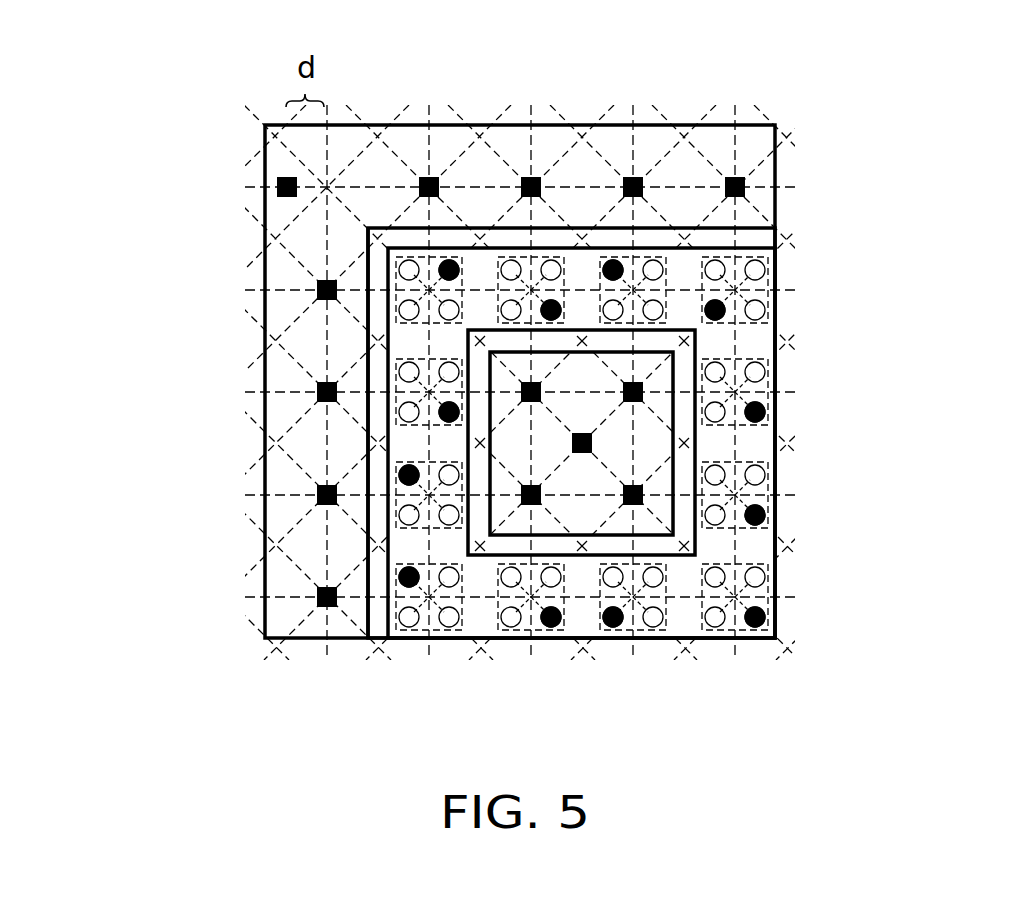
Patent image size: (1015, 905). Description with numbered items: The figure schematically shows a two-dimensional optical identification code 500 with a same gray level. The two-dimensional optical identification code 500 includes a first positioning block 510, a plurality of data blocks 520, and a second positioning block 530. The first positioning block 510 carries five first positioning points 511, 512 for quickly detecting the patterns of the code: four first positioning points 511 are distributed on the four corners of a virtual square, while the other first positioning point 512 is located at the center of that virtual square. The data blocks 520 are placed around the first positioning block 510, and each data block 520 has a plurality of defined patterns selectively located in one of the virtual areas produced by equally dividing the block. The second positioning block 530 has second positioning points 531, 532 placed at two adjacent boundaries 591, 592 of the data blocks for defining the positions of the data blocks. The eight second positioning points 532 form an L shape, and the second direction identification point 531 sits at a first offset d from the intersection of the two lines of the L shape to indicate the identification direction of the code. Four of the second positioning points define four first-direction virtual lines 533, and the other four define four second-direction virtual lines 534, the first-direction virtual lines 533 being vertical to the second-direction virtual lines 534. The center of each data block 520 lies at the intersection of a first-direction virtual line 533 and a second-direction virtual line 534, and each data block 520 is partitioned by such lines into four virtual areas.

The two-dimensional optical identification code 500 is at (102, 75).
The first positioning block 510 is at (693, 352).
The first positioning points 511 is at (527, 401).
The first positioning point 512 is at (581, 453).
The data blocks 520 is at (747, 423).
The second positioning block 530 is at (267, 247).
The second direction identification point 531 is at (278, 185).
The second positioning points 532 is at (727, 180).
The first-direction virtual lines 533 is at (300, 290).
The second-direction virtual lines 534 is at (432, 228).
The boundary 591 is at (390, 228).
The boundary 592 is at (368, 268).